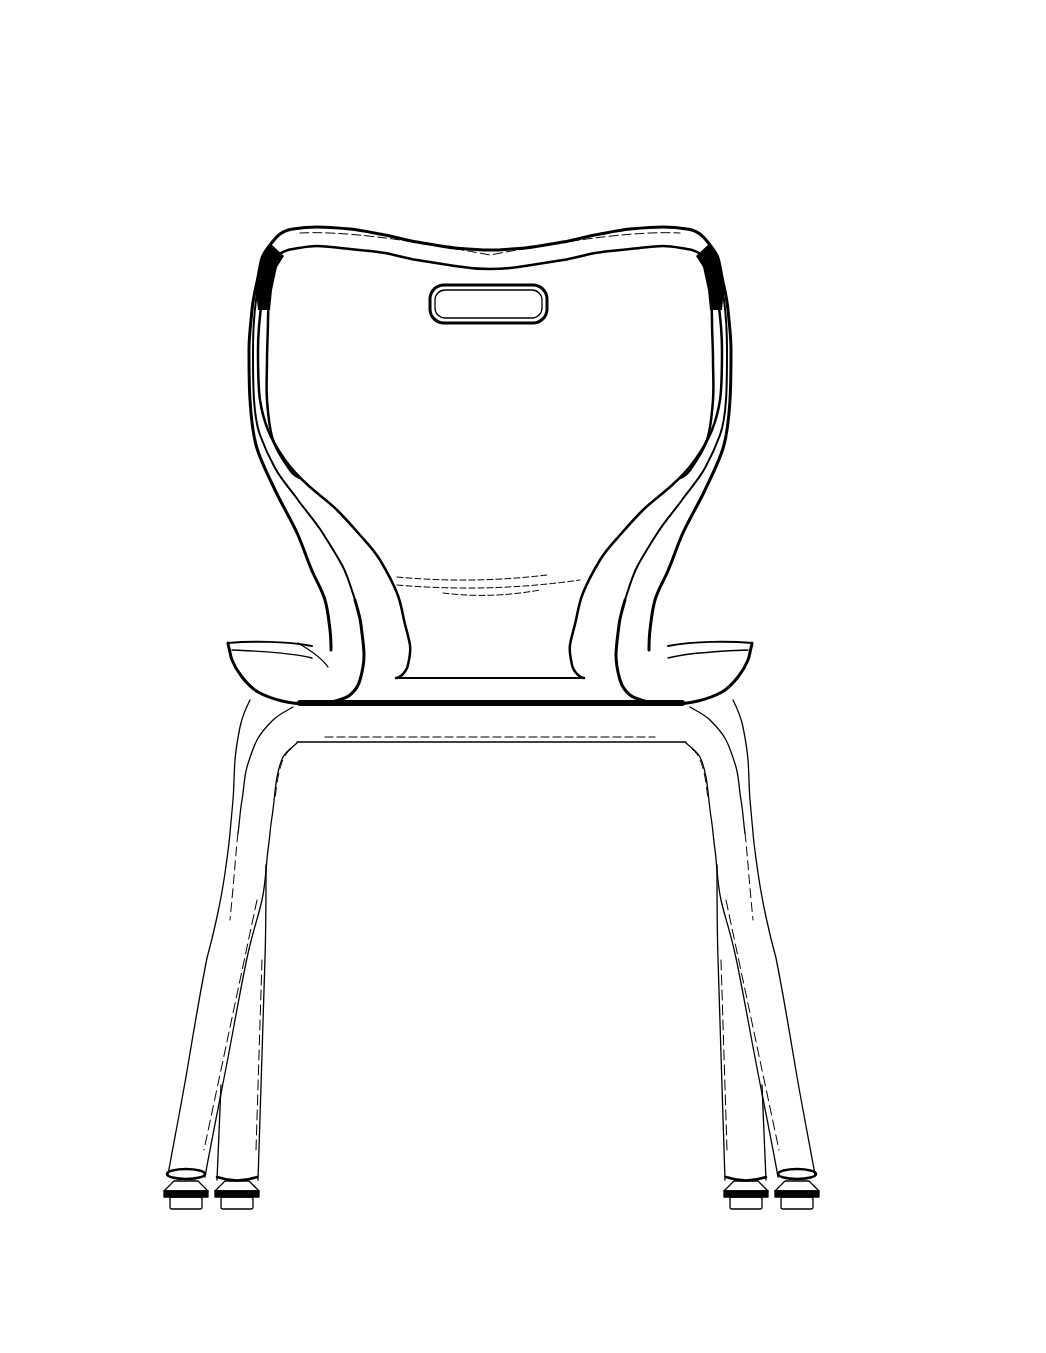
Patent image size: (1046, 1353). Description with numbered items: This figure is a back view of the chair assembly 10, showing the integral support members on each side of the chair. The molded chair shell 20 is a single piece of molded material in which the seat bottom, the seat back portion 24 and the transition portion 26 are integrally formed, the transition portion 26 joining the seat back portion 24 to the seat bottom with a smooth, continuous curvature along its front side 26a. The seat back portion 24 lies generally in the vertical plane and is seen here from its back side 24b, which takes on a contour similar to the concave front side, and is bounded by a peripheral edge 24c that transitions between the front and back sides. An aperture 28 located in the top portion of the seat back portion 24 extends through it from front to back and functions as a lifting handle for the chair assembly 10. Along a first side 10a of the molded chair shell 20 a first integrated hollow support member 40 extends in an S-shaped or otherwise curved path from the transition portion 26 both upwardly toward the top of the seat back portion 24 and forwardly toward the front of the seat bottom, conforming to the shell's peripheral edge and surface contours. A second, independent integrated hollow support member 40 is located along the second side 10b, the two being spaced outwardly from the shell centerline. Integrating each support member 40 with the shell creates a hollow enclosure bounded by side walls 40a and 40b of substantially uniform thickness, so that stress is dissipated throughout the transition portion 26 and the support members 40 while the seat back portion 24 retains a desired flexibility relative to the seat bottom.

The chair assembly 10 is at (680, 112).
The side of the molded chair shell 10a is at (226, 417).
The second side of the molded chair shell 10b is at (758, 402).
The molded chair shell 20 is at (746, 285).
The seat back portion 24 is at (388, 347).
The back side of the seat back portion 24b is at (540, 363).
The peripheral edge of the seat back portion 24c is at (263, 253).
The transition portion 26 is at (450, 615).
The front side of the transition portion 26a is at (510, 623).
The aperture 28 is at (493, 300).
The integrated hollow support member 40 is at (345, 619).
The side wall 40a is at (312, 646).
The side wall 40b is at (380, 660).